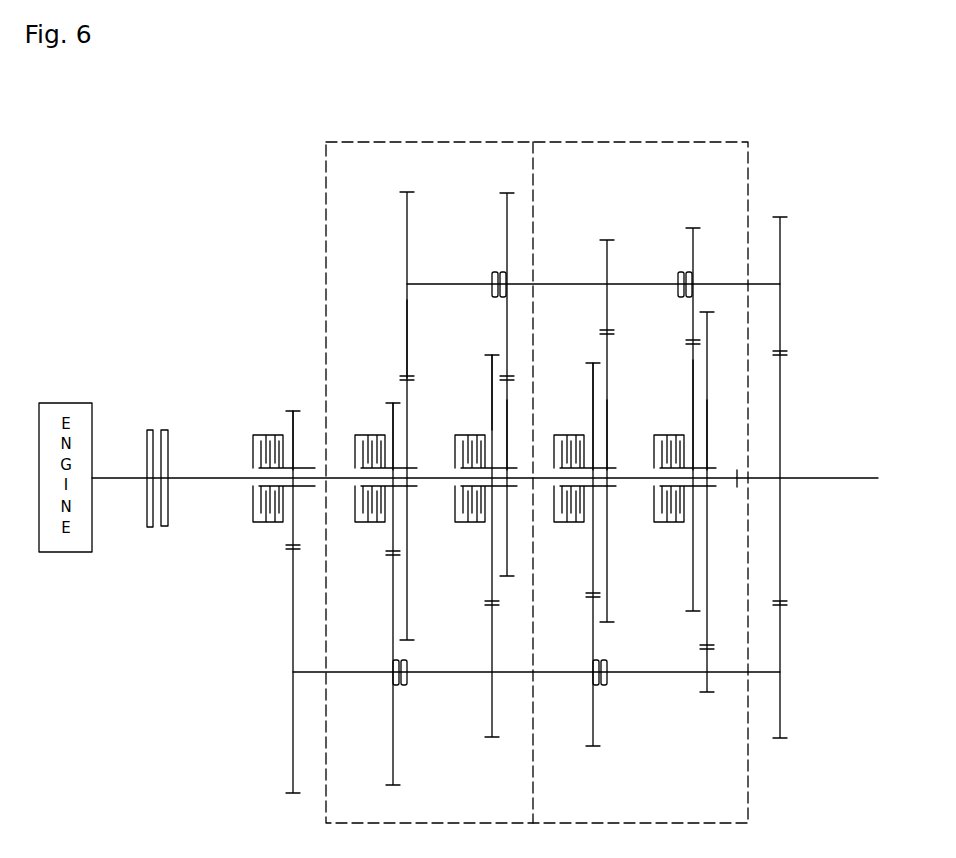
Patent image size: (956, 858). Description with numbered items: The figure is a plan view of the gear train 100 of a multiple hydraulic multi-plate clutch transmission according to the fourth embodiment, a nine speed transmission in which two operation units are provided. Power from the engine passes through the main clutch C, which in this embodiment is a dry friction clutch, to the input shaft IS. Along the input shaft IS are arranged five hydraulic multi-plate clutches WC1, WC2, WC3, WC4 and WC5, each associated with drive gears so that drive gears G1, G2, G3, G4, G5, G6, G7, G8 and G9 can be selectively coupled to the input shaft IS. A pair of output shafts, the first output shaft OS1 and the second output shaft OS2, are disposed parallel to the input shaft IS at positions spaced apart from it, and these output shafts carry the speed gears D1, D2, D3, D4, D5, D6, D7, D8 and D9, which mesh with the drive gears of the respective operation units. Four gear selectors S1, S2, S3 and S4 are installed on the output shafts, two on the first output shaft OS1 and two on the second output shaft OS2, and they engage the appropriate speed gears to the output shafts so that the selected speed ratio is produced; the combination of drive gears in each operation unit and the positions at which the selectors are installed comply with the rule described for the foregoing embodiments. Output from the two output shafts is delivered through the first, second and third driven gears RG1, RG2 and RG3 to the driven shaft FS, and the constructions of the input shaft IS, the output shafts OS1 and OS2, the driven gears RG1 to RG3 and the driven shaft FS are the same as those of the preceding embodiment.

The transmission 100 is at (687, 168).
The main clutch C is at (148, 527).
The input shaft IS is at (195, 480).
The driven shaft FS is at (835, 480).
The hydraulic multi-plate clutch WC1 is at (255, 535).
The hydraulic multi-plate clutch WC2 is at (364, 538).
The hydraulic multi-plate clutch WC3 is at (465, 538).
The hydraulic multi-plate clutch WC4 is at (565, 538).
The hydraulic multi-plate clutch WC5 is at (665, 538).
The speed gear D1 is at (292, 614).
The speed gear D2 is at (394, 607).
The speed gear D3 is at (506, 373).
The speed gear D4 is at (594, 567).
The speed gear D5 is at (692, 408).
The speed gear D6 is at (406, 404).
The speed gear D7 is at (496, 558).
The speed gear D8 is at (607, 420).
The speed gear D9 is at (707, 515).
The drive gear G1 is at (292, 422).
The drive gear G2 is at (392, 422).
The drive gear G3 is at (508, 428).
The drive gear G4 is at (592, 390).
The drive gear G5 is at (692, 388).
The drive gear G6 is at (408, 350).
The drive gear G7 is at (491, 397).
The drive gear G8 is at (608, 443).
The drive gear G9 is at (708, 423).
The selector S1 is at (408, 685).
The selector S2 is at (492, 275).
The selector S3 is at (608, 685).
The selector S4 is at (678, 275).
The first output shaft OS1 is at (353, 673).
The second output shaft OS2 is at (553, 284).
The first driven gear RG1 is at (781, 650).
The second driven gear RG2 is at (781, 250).
The third driven gear RG3 is at (781, 430).